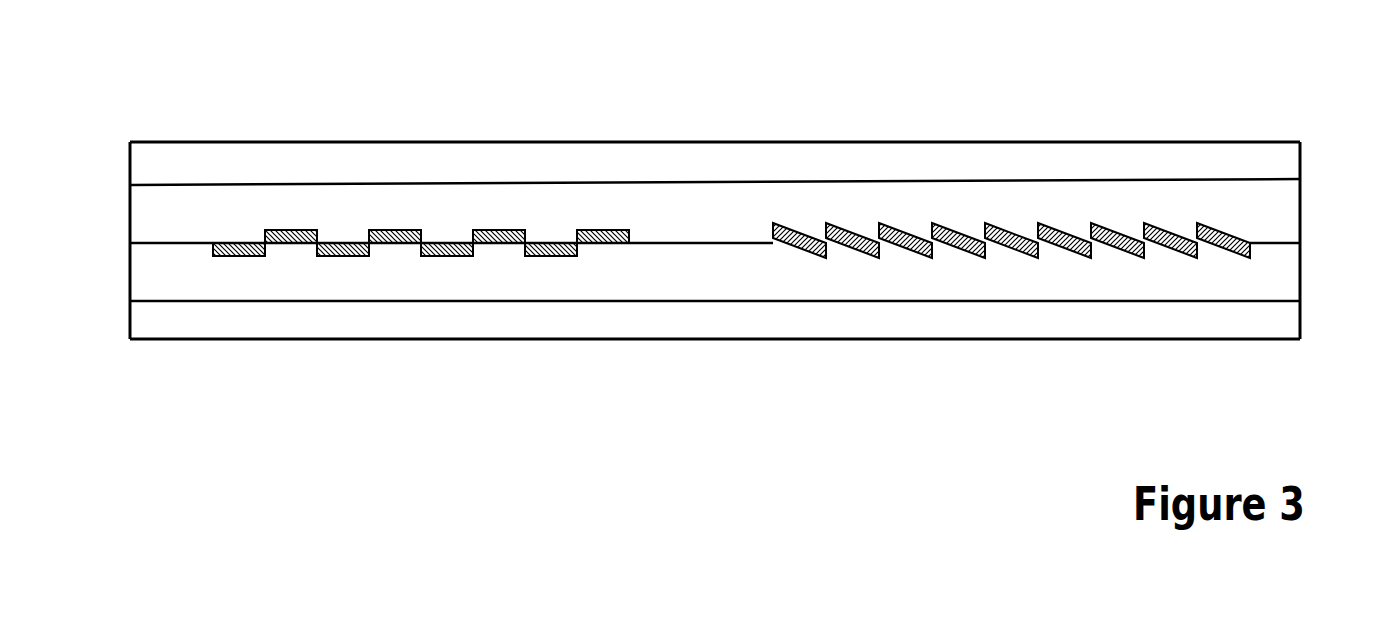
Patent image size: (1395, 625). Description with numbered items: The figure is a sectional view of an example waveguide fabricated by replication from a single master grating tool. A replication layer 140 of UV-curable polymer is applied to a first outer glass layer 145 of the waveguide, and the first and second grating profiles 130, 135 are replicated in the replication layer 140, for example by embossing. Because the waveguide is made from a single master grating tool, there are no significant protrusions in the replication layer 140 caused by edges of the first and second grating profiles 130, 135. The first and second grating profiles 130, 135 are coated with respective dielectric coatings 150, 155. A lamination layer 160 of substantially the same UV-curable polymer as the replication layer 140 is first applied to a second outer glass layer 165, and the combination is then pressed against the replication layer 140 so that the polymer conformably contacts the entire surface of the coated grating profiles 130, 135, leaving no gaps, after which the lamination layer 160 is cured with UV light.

The first grating profile 130 is at (1008, 233).
The second grating profile 135 is at (290, 230).
The replication layer 140 is at (1283, 212).
The first outer glass layer 145 is at (145, 163).
The dielectric coating 150 is at (352, 258).
The dielectric coating 155 is at (959, 250).
The lamination layer 160 is at (1283, 269).
The second outer glass layer 165 is at (143, 319).